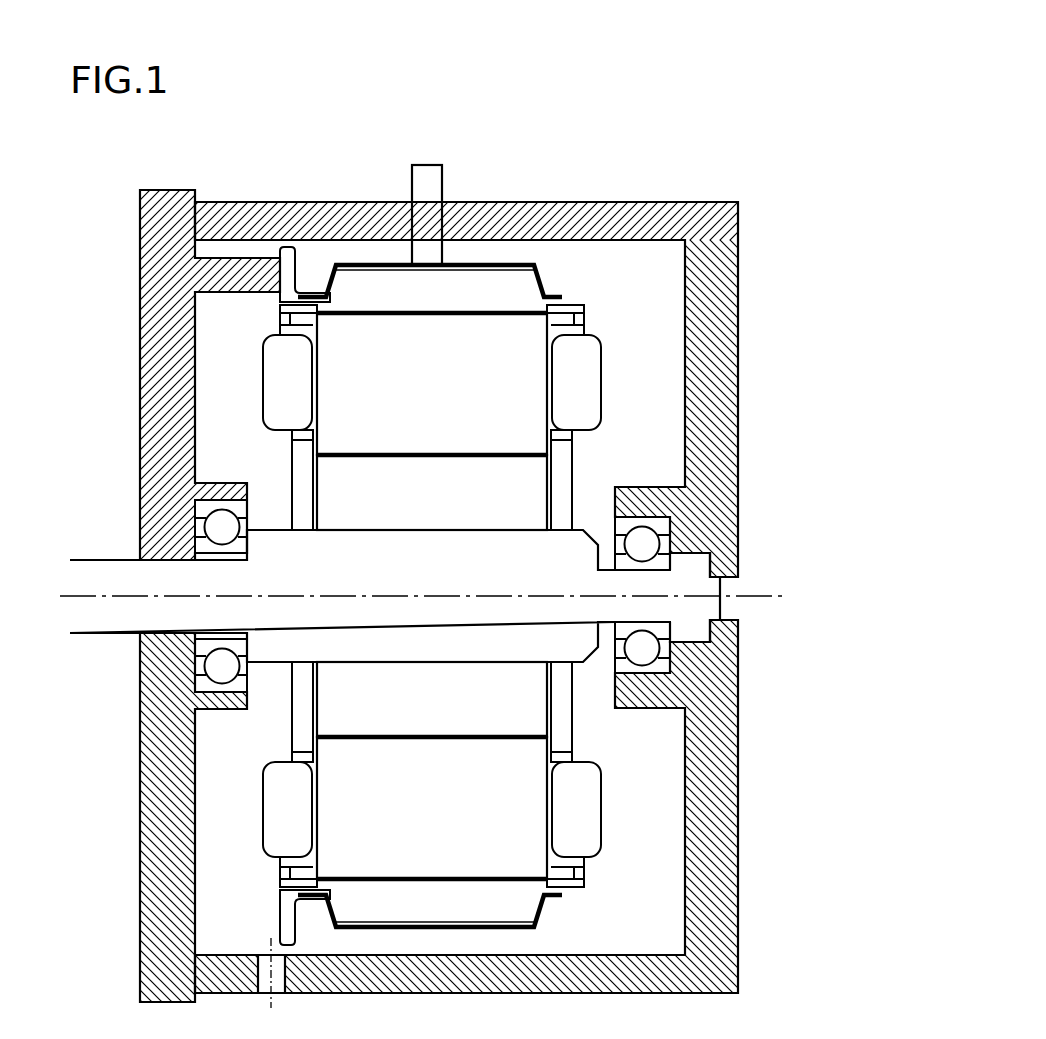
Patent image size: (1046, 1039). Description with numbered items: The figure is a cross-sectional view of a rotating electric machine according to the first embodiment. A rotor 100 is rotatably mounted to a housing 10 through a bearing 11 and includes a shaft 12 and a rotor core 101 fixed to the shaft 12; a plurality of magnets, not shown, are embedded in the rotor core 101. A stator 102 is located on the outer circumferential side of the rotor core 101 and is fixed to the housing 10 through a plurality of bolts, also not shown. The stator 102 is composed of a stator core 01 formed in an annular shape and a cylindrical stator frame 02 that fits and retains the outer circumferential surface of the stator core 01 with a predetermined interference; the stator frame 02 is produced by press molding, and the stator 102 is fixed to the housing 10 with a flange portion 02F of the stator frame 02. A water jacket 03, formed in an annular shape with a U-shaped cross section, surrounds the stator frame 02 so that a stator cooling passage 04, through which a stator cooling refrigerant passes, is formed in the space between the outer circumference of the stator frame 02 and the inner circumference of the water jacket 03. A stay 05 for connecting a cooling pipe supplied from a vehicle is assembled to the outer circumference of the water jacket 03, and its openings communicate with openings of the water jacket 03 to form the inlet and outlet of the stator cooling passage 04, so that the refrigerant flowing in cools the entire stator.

The housing 10 is at (140, 238).
The bearing 11 is at (214, 668).
The shaft 12 is at (697, 596).
The rotor 100 is at (850, 378).
The rotor core 101 is at (493, 487).
The stator 102 is at (828, 210).
The stator core 01 is at (493, 358).
The stator frame 02 is at (312, 307).
The flange portion 02F is at (285, 250).
The water jacket 03 is at (493, 262).
The stator cooling passage 04 is at (505, 286).
The stay 05 is at (425, 199).